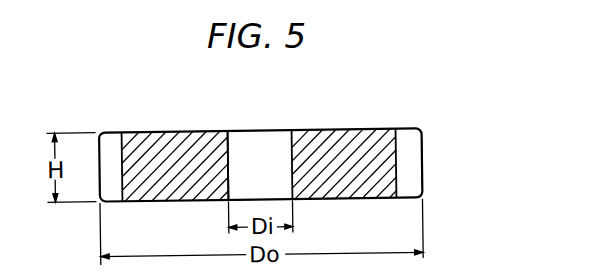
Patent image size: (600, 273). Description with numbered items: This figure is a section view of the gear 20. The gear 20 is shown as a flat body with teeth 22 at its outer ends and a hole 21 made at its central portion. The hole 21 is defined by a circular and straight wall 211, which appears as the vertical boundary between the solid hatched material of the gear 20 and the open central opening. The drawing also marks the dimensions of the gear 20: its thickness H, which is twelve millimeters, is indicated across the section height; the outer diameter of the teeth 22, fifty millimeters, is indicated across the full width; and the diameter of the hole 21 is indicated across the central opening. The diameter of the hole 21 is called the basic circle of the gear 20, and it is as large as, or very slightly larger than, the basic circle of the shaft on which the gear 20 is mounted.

The gear 20 is at (345, 130).
The hole 21 is at (267, 142).
The circular and straight wall 211 is at (237, 152).
The teeth 22 is at (413, 161).